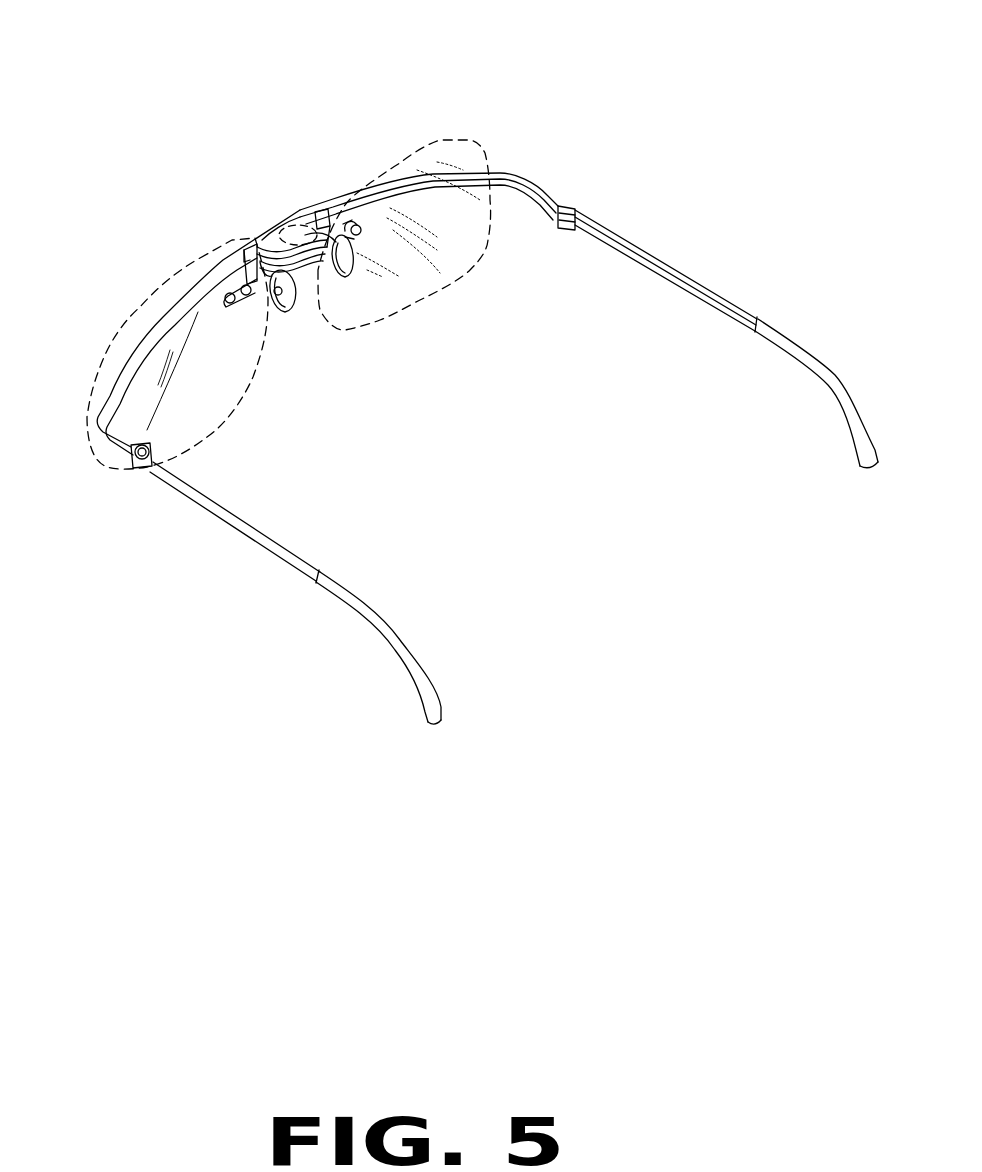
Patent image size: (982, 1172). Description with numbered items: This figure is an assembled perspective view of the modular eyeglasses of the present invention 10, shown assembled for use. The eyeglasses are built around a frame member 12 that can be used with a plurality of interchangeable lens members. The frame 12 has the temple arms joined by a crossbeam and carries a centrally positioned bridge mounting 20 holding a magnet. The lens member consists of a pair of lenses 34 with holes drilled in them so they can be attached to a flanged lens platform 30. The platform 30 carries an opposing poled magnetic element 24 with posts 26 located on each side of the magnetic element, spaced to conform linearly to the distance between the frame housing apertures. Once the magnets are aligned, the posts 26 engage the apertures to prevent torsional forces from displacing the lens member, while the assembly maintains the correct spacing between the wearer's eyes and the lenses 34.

The present invention 10 is at (563, 133).
The frame member 12 is at (164, 317).
The bridge mounting 20 is at (356, 224).
The opposing poled magnetic element 24 is at (307, 262).
The posts 26 is at (290, 218).
The flanged lens platform 30 is at (318, 212).
The lenses 34 is at (417, 302).